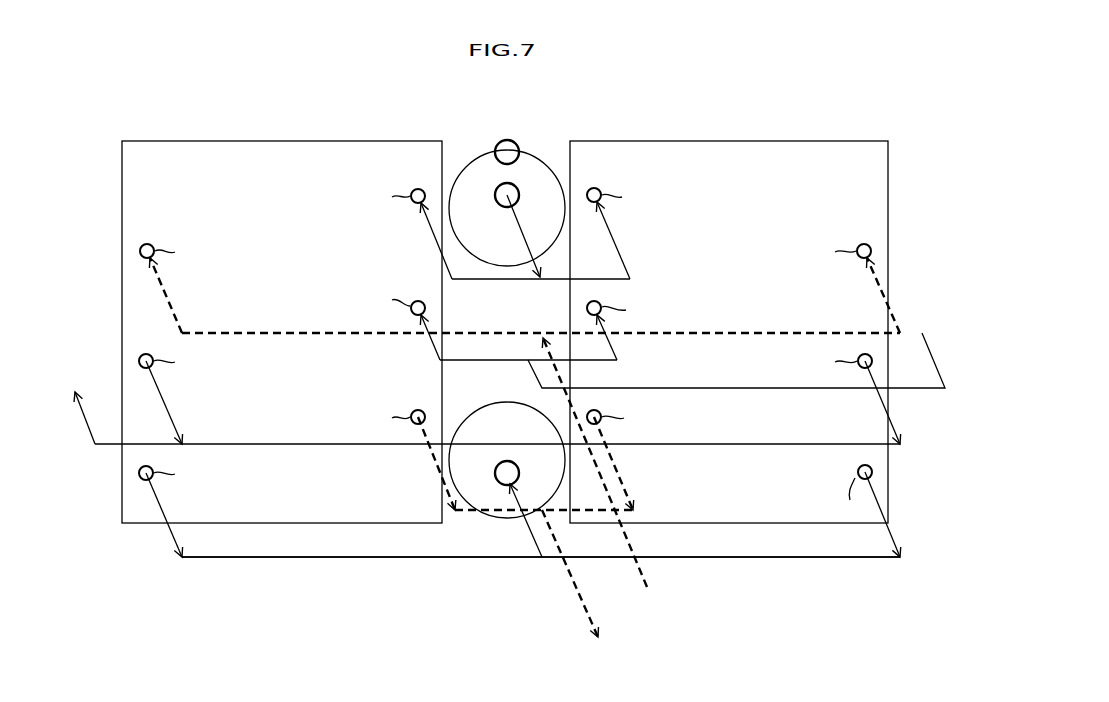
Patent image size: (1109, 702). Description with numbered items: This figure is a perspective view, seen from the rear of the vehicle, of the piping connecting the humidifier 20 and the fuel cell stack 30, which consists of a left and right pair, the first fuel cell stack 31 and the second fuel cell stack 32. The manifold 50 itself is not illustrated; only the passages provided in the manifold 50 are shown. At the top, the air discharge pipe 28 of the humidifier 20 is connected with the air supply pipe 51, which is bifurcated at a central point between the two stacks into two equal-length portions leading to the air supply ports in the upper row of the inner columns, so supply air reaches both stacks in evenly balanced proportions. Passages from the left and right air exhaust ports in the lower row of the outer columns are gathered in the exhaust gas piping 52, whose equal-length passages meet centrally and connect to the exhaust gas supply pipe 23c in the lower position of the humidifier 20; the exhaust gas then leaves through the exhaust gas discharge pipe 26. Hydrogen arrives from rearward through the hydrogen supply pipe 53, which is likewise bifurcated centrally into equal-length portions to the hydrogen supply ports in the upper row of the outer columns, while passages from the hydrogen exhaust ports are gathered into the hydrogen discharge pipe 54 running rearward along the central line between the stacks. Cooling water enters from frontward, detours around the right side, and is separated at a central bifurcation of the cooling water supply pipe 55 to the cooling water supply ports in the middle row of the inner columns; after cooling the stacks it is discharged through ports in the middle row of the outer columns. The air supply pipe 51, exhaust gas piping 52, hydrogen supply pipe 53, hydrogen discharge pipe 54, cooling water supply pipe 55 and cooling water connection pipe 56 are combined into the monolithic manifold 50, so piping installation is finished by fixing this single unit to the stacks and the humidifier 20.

The humidifier 20 is at (465, 132).
The exhaust gas supply pipe 23c is at (495, 470).
The exhaust gas discharge pipe 26 is at (507, 140).
The air discharge pipe 28 is at (514, 186).
The fuel cell stack 30 is at (505, 310).
The first fuel cell stack 31 is at (738, 141).
The second fuel cell stack 32 is at (235, 141).
The manifold 50 is at (878, 602).
The air supply pipe 51 is at (452, 281).
The exhaust gas piping 52 is at (733, 558).
The hydrogen supply pipe 53 is at (225, 333).
The hydrogen discharge pipe 54 is at (500, 512).
The cooling water supply pipe 55 is at (742, 390).
The cooling water connection pipe 56 is at (650, 445).